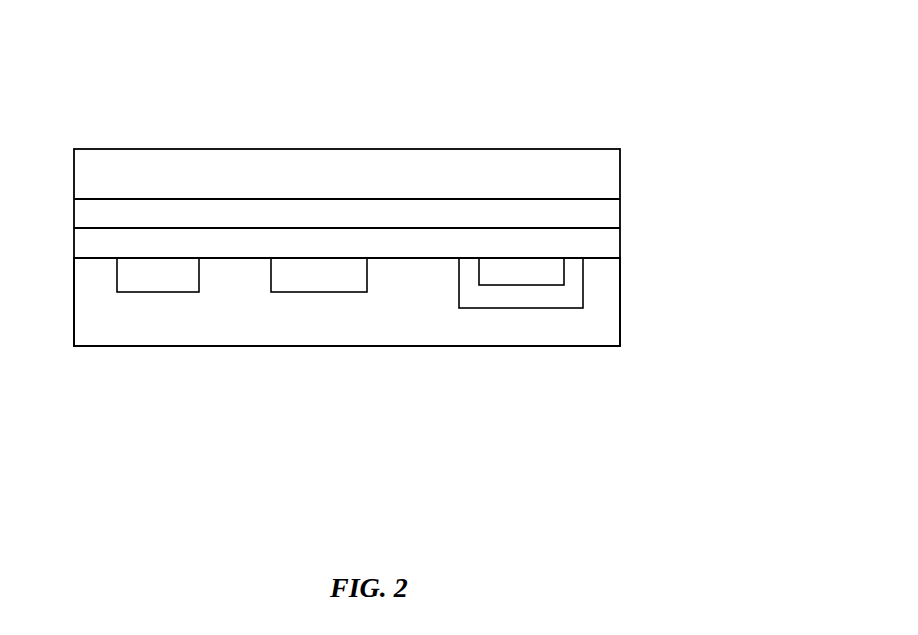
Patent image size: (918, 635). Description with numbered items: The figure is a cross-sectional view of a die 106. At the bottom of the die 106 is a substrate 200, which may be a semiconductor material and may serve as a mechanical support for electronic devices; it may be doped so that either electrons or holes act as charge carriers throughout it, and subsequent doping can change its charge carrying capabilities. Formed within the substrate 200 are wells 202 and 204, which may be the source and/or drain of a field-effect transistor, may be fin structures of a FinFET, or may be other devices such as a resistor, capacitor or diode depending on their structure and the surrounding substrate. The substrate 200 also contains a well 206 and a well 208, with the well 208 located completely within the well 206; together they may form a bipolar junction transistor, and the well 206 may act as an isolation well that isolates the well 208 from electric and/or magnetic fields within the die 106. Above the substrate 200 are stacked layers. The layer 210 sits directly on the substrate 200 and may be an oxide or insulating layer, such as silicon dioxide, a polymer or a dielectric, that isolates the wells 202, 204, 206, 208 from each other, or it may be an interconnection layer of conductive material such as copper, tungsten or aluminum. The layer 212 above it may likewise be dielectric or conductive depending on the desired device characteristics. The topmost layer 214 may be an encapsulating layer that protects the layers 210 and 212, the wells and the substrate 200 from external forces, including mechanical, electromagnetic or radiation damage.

The die 106 is at (345, 95).
The substrate 200 is at (620, 306).
The well 202 is at (153, 293).
The well 204 is at (313, 293).
The well 206 is at (562, 309).
The well 208 is at (502, 286).
The layer 210 is at (620, 239).
The layer 212 is at (620, 211).
The layer 214 is at (620, 168).